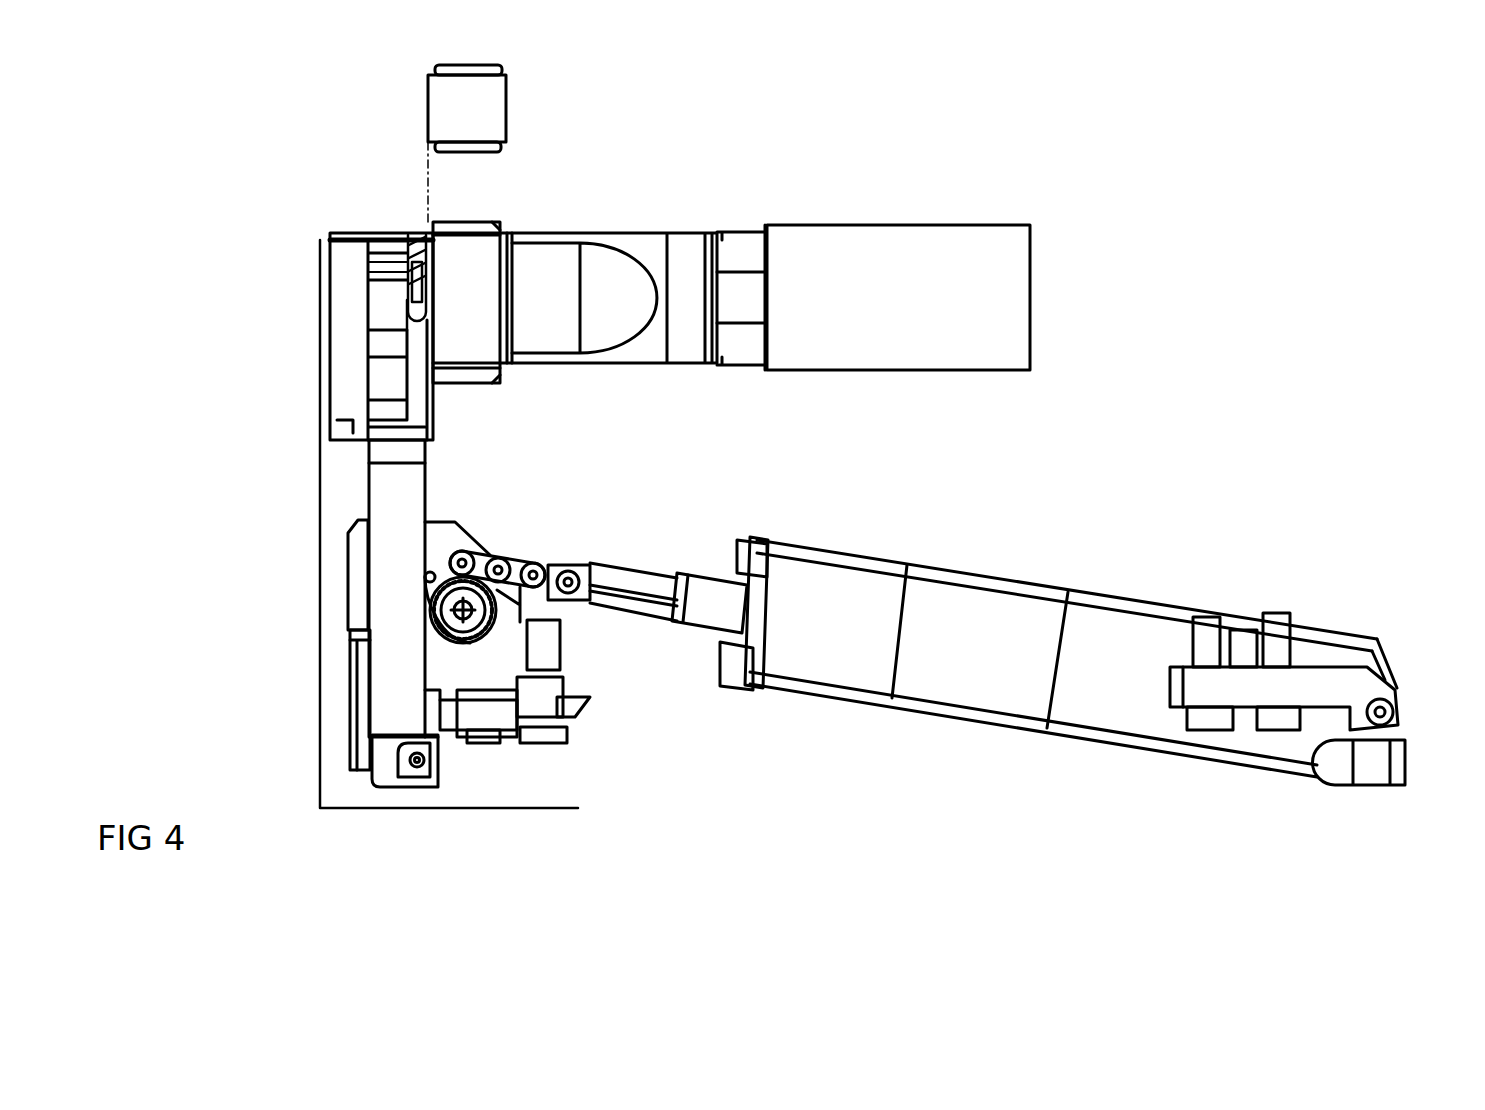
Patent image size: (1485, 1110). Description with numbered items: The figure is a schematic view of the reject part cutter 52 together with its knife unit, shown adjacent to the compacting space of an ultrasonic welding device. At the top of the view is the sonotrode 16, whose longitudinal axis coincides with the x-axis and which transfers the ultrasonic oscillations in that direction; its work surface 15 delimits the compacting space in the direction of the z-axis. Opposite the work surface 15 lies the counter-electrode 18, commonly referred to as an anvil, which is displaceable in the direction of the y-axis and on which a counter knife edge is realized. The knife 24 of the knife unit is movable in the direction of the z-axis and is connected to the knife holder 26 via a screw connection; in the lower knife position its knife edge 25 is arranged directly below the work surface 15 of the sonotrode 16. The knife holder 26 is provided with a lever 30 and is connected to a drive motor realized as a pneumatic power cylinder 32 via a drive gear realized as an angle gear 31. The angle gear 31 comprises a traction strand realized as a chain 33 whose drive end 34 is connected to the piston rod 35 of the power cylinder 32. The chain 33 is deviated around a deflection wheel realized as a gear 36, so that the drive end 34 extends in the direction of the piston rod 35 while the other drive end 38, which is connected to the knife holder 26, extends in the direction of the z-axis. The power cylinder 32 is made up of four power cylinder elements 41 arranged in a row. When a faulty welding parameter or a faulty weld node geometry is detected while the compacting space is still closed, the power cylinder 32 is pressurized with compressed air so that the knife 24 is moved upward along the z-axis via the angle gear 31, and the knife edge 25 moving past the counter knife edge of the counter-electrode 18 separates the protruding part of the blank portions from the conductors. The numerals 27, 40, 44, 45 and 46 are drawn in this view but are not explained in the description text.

The work surface 15 is at (475, 216).
The sonotrode 16 is at (528, 278).
The counter-electrode 18 is at (520, 125).
The knife 24 is at (357, 258).
The knife edge 25 is at (412, 232).
The knife holder 26 is at (403, 303).
The spring 27 is at (355, 278).
The lever 30 is at (363, 467).
The angle gear 31 is at (520, 545).
The power cylinder 32 is at (1105, 592).
The chain 33 is at (553, 557).
The drive end 34 is at (577, 603).
The piston rod 35 is at (722, 593).
The gear 36 is at (490, 660).
The drive end 38 is at (440, 747).
The guide 40 is at (333, 705).
The power cylinder elements 41 is at (877, 597).
The end unit 44 is at (1410, 657).
The frame 45 is at (320, 620).
The base bracket 46 is at (463, 770).
The reject part cutter 52 is at (1083, 420).